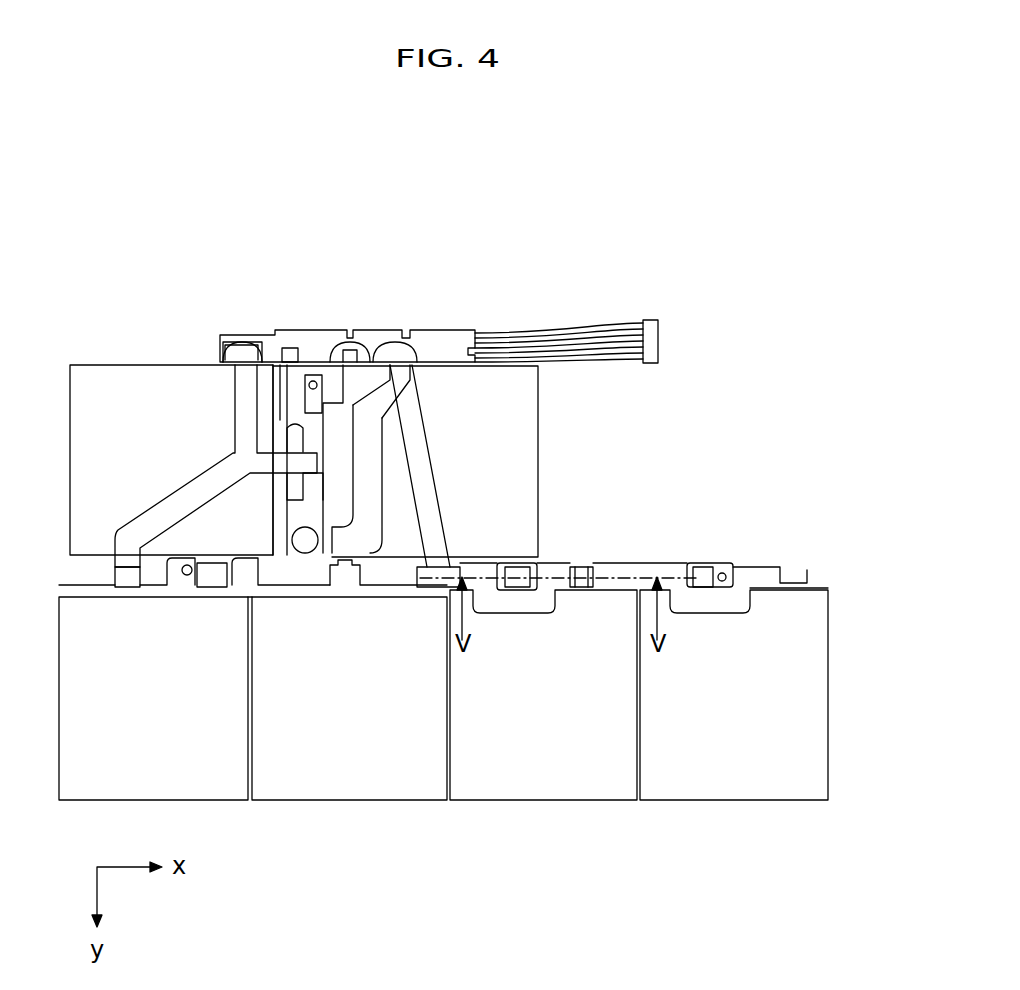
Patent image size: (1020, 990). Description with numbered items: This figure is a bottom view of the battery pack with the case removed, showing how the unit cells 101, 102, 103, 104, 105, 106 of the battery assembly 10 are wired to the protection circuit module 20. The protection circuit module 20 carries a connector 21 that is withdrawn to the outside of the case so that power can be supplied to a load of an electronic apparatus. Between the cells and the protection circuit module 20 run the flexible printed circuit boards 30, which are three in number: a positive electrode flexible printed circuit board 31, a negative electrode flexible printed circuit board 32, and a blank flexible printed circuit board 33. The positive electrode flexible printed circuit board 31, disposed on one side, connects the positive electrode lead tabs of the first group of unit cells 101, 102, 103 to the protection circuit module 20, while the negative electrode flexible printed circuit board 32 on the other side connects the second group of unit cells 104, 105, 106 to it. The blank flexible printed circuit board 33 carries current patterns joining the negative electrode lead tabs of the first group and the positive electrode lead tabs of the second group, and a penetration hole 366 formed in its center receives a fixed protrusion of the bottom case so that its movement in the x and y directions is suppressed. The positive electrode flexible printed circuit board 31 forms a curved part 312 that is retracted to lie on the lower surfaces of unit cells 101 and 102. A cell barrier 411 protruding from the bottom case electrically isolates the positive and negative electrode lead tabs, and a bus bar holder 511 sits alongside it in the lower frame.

The battery module 10 is at (443, 580).
The unit cell 101 is at (755, 705).
The unit cell 102 is at (565, 705).
The unit cell 103 is at (365, 705).
The unit cell 104 is at (175, 705).
The unit cell 105 is at (175, 449).
The unit cell 106 is at (508, 449).
The protection circuit module 20 is at (434, 330).
The connector 21 is at (650, 320).
The flexible printed circuit boards 30 is at (750, 320).
The positive electrode flexible printed circuit board 31 is at (545, 611).
The negative electrode flexible printed circuit board 32 is at (220, 477).
The blank flexible printed circuit board 33 is at (372, 428).
The curved part 312 is at (508, 605).
The hole 366 is at (300, 548).
The cell barrier 411 is at (602, 573).
The bus bar holder 511 is at (520, 572).